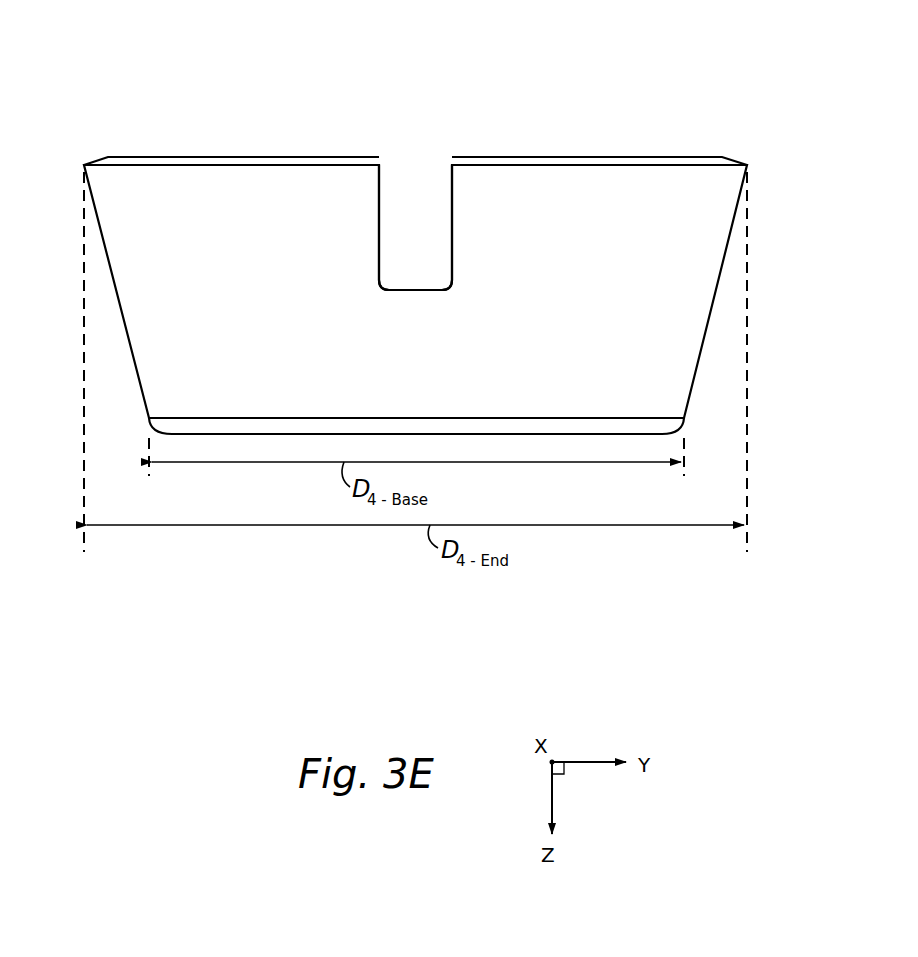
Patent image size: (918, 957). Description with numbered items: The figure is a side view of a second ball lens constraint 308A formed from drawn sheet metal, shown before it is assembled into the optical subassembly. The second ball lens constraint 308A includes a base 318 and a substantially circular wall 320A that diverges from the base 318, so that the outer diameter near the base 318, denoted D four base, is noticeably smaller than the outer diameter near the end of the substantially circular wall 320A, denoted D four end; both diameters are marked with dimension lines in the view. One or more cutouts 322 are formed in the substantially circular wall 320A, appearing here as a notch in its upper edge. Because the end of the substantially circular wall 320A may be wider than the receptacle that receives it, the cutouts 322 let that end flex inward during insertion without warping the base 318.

The second ball lens constraint 308A is at (427, 280).
The substantially circular wall 320A is at (548, 195).
The cutouts 322 is at (382, 187).
The base 318 is at (590, 435).